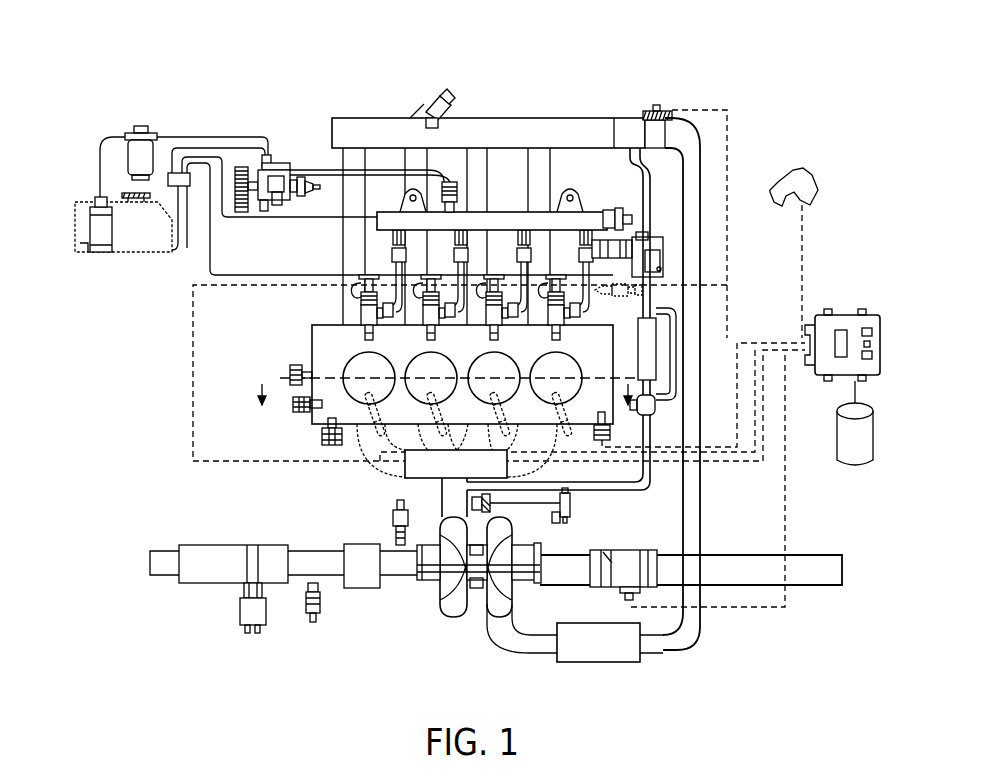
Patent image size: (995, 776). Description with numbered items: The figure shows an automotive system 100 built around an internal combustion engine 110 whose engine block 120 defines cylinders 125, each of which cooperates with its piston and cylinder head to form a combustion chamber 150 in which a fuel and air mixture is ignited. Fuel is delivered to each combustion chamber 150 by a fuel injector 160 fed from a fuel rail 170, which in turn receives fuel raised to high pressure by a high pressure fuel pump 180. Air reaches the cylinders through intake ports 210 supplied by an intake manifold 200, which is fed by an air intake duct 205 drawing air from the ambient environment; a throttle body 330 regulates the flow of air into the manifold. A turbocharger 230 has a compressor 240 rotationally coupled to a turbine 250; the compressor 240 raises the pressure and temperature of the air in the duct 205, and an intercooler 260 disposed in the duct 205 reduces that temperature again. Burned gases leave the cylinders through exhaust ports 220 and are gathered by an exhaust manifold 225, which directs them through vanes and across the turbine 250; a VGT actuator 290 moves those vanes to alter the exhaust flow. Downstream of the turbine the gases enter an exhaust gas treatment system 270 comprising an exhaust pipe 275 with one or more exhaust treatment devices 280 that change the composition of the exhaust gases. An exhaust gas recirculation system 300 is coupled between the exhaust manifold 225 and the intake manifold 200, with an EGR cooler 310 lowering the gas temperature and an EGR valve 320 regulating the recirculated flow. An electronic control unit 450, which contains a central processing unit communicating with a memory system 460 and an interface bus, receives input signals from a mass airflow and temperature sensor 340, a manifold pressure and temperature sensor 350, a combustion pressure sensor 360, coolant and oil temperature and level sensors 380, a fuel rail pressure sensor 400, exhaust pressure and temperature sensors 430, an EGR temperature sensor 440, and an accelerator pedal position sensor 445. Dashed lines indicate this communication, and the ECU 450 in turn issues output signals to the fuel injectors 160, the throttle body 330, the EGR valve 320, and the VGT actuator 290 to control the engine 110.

The automotive system 100 is at (250, 98).
The internal combustion engine 110 is at (552, 100).
The engine block 120 is at (350, 328).
The cylinder 125 is at (580, 285).
The combustion chamber 150 is at (151, 235).
The fuel injector 160 is at (360, 312).
The fuel rail 170 is at (377, 222).
The high pressure fuel pump 180 is at (278, 157).
The intake manifold 200 is at (488, 118).
The air intake duct 205 is at (702, 520).
The intake port 210 is at (312, 364).
The exhaust port 220 is at (360, 428).
The exhaust manifold 225 is at (396, 503).
The turbocharger 230 is at (450, 620).
The compressor 240 is at (500, 620).
The turbine 250 is at (444, 584).
The intercooler 260 is at (620, 664).
The exhaust gas treatment system 270 is at (175, 533).
The exhaust pipe 275 is at (152, 563).
The exhaust treatment device 280 is at (206, 586).
The VGT actuator 290 is at (495, 510).
The exhaust gas recirculation system 300 is at (608, 491).
The EGR cooler 310 is at (657, 378).
The EGR valve 320 is at (656, 240).
The throttle body 330 is at (657, 108).
The mass airflow and temperature sensor 340 is at (620, 590).
The manifold pressure and temperature sensor 350 is at (432, 97).
The combustion pressure sensor 360 is at (376, 440).
The coolant and oil temperature and level sensors 380 is at (330, 446).
The fuel rail pressure sensor 400 is at (634, 216).
The exhaust pressure and temperature sensors 430 is at (252, 633).
The EGR temperature sensor 440 is at (645, 290).
The accelerator pedal position sensor 445 is at (805, 172).
The electronic control unit 450 is at (852, 311).
The memory system 460 is at (858, 467).